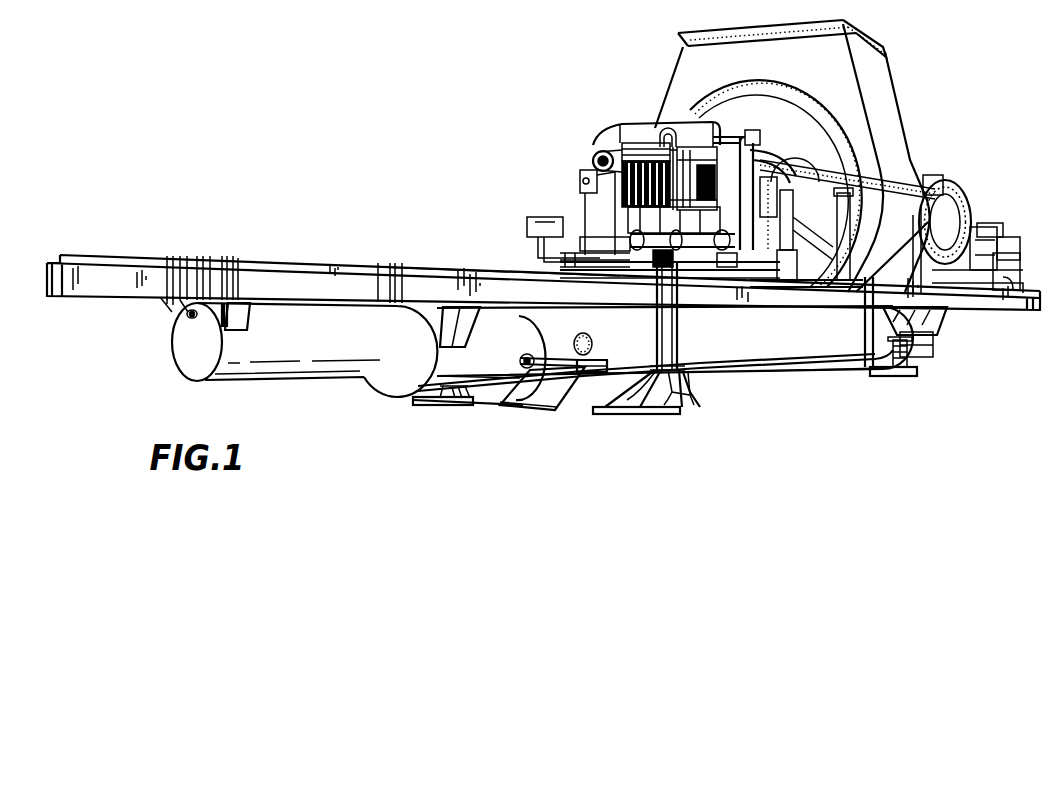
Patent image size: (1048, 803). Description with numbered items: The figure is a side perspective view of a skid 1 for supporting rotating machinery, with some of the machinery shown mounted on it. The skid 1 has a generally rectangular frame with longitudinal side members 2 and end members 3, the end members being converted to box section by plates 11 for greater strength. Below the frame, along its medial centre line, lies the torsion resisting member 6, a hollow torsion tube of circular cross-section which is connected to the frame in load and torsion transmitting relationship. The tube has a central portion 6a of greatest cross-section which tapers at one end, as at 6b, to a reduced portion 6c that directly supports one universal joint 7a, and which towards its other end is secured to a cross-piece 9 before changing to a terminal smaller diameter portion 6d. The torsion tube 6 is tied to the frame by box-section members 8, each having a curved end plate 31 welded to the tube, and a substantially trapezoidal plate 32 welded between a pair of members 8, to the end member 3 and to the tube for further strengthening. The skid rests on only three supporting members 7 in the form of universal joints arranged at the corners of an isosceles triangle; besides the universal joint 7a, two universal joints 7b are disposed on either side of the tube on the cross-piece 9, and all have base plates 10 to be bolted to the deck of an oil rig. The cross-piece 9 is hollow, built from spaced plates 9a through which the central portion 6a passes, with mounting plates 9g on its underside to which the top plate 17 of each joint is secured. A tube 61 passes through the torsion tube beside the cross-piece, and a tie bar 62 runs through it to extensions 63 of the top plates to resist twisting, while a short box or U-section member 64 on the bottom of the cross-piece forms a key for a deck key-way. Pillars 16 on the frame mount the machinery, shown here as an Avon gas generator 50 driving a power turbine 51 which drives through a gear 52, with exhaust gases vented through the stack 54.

The skid 1 is at (543, 347).
The longitudinal side members 2 is at (527, 280).
The end members 3 is at (274, 276).
The torsion resisting member (torsion tube) 6 is at (803, 365).
The central portion 6a is at (814, 364).
The tapered end portion 6b is at (868, 332).
The reduced cross-section portion 6c is at (927, 346).
The terminal smaller diameter portion 6d is at (313, 360).
The supporting members (universal joints) 7 is at (445, 407).
The universal joint 7a is at (913, 367).
The universal joints 7b is at (463, 401).
The members 8 is at (228, 320).
The cross-piece 9 is at (637, 344).
The spaced plates 9a is at (546, 310).
The mounting plates 9g is at (733, 366).
The base plates 10 is at (428, 401).
The plates 11 is at (231, 276).
The pillars 16 is at (900, 277).
The top plate 17 is at (682, 375).
The end plate 31 is at (250, 332).
The plate 32 is at (177, 303).
The Avon gas generator 50 is at (947, 187).
The power turbine 51 is at (807, 140).
The gear 52 is at (600, 135).
The stack 54 is at (830, 65).
The tube 61 is at (523, 358).
The tie bar 62 is at (556, 360).
The extensions 63 is at (598, 375).
The box or U-section member 64 is at (530, 408).